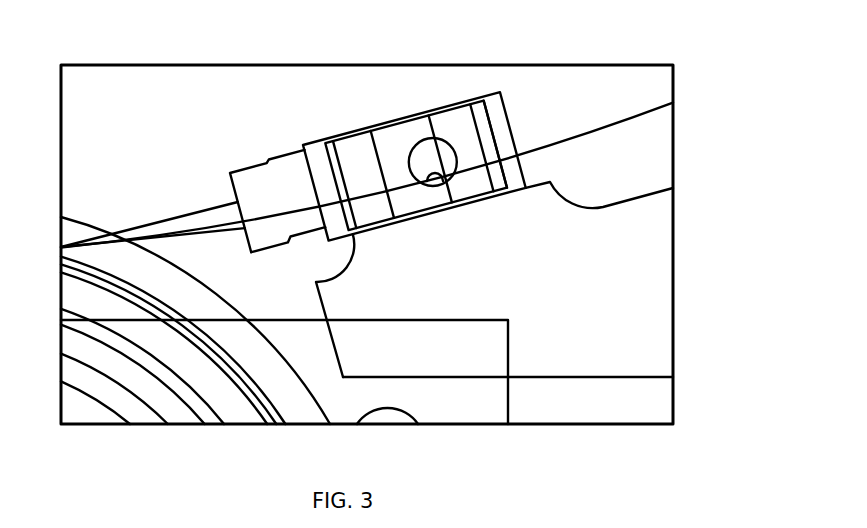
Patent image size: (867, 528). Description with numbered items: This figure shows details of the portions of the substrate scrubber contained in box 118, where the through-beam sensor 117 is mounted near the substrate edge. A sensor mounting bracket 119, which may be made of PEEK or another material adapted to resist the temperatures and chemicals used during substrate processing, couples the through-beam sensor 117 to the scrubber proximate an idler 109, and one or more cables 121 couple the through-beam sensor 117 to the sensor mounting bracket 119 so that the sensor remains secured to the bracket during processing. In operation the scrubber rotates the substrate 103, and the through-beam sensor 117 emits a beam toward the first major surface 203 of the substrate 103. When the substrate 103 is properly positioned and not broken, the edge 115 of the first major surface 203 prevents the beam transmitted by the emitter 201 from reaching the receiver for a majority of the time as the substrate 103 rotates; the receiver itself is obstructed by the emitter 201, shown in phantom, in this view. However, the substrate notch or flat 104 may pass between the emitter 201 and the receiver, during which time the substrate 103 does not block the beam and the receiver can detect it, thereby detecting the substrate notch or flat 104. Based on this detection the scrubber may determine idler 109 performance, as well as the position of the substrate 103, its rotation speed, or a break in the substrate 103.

The substrate 103 is at (587, 138).
The substrate notch or flat 104 is at (436, 186).
The idler 109 is at (70, 219).
The edge 115 is at (637, 99).
The through-beam sensor 117 is at (481, 77).
The box 118 is at (674, 65).
The sensor mounting bracket 119 is at (640, 378).
The cable 121 is at (172, 218).
The emitter 201 is at (306, 144).
The first major surface 203 is at (592, 90).